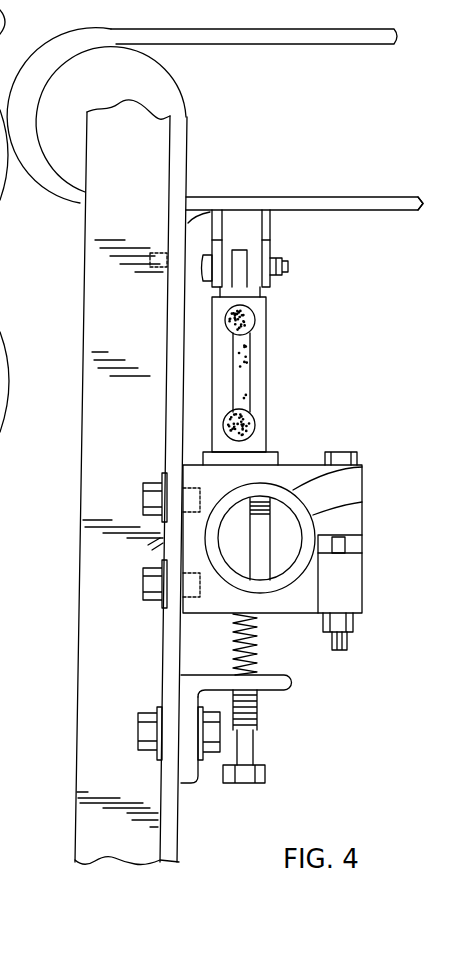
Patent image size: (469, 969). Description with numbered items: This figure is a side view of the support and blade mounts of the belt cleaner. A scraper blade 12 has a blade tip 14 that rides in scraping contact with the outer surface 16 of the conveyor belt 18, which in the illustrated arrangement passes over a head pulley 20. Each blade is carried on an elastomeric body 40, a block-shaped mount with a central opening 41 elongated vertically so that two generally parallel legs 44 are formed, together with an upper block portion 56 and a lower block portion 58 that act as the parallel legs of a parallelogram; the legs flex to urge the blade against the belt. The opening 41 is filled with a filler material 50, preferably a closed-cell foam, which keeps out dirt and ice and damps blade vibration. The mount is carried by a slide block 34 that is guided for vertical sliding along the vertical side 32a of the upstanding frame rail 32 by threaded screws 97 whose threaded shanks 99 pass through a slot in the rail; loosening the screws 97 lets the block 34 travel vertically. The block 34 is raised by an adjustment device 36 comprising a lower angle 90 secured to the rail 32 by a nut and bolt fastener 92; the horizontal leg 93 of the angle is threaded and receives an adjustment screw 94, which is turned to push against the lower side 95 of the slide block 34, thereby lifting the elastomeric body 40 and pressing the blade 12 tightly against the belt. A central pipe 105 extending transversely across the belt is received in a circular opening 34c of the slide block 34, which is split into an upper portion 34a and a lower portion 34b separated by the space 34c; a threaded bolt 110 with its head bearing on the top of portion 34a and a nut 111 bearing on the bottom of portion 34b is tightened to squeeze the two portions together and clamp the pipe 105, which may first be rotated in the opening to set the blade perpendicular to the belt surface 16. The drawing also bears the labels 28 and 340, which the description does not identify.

The scraper blade 12 is at (278, 243).
The blade tip 14 is at (250, 205).
The outer surface 16 is at (353, 212).
The conveyor belt 18 is at (343, 45).
The head pulley 20 is at (184, 82).
The fluid level indicator assembly 28 is at (250, 374).
The frame rail 32 is at (88, 343).
The vertical side 32a is at (210, 213).
The slide block 34 is at (326, 521).
The upper split portion 34a is at (347, 490).
The lower split portion 34b is at (358, 588).
The circular opening 34c is at (357, 543).
The adjustment device 36 is at (277, 710).
The elastomeric body 40 is at (8, 368).
The central opening 41 is at (254, 377).
The legs 44 is at (236, 374).
The filler material 50 is at (255, 410).
The upper block portion 56 is at (248, 303).
The lower block portion 58 is at (242, 442).
The lower angle 90 is at (0, 515).
The nut and bolt fastener 92 is at (137, 730).
The horizontal leg 93 is at (258, 633).
The adjustment screw 94 is at (258, 660).
The lower side 95 is at (198, 640).
The threaded screws 97 is at (143, 502).
The threaded shanks 99 is at (160, 546).
The pipe 105 is at (362, 470).
The threaded bolt 110 is at (340, 650).
The nut 111 is at (356, 636).
The clamp bolt 340 is at (360, 507).